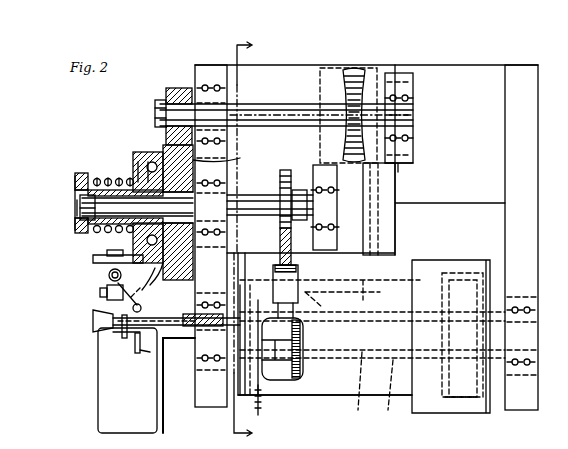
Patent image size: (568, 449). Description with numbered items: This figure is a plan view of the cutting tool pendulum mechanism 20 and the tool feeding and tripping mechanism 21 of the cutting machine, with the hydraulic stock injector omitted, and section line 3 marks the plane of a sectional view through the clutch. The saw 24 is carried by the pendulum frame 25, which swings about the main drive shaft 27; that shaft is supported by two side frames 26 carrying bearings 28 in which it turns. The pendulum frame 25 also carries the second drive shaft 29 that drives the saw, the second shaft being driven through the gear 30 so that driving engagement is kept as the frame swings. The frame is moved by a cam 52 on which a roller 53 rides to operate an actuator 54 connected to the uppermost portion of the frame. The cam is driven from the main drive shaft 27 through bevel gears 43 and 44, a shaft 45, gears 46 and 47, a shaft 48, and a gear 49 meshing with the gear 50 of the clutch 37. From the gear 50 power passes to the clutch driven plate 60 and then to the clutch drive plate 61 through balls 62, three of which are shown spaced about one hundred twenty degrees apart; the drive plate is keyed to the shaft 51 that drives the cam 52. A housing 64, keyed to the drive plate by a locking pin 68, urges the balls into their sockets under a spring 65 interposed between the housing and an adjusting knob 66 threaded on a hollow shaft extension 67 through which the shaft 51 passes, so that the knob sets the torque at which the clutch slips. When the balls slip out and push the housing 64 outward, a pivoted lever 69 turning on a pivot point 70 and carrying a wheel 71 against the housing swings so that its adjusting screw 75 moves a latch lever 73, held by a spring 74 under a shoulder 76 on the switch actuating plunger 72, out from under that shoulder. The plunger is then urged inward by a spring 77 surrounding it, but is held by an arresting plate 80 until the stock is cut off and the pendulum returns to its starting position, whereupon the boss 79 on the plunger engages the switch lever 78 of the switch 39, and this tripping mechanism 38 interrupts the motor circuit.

The section line 3- 3 is at (250, 242).
The cutting tool pendulum mechanism 20 is at (325, 413).
The tool feeding and tripping mechanism 21 is at (119, 185).
The saw 24 is at (262, 402).
The pendulum frame 25 is at (440, 260).
The side frames 26 is at (538, 232).
The main drive shaft 27 is at (356, 391).
The bearings 28 is at (536, 362).
The second drive shaft 29 is at (386, 395).
The gear 30 is at (466, 400).
The clutch 37 is at (170, 150).
The tripping mechanism 38 is at (109, 275).
The switch 39 is at (97, 432).
The bevel gear 43 is at (303, 365).
The bevel gear 44 is at (398, 297).
The shaft 45 is at (340, 280).
The gear 46 is at (392, 75).
The gear 47 is at (362, 70).
The shaft 48 is at (290, 103).
The gear 49 is at (180, 88).
The gear of the clutch 50 is at (227, 157).
The shaft 51 is at (256, 195).
The cam 52 is at (286, 170).
The roller 53 is at (292, 258).
The actuator 54 is at (285, 291).
The clutch driven plate 60 is at (165, 165).
The clutch drive plate 61 is at (142, 182).
The balls 62 is at (150, 152).
The housing 64 is at (158, 268).
The spring 65 is at (96, 175).
The adjusting knob 66 is at (76, 176).
The hollow shaft extension 67 is at (78, 210).
The locking pin 68 is at (138, 234).
The pivoted lever 69 is at (107, 262).
The pivot point 70 is at (107, 290).
The wheel 71 is at (100, 256).
The switch actuating plunger 72 is at (160, 312).
The latch lever 73 is at (118, 300).
The spring 74 is at (158, 263).
The adjusting screw 75 is at (100, 292).
The shoulder 76 is at (93, 320).
The spring 77 is at (200, 322).
The switch lever 78 is at (135, 340).
The boss 79 is at (113, 334).
The arresting plate 80 is at (242, 290).